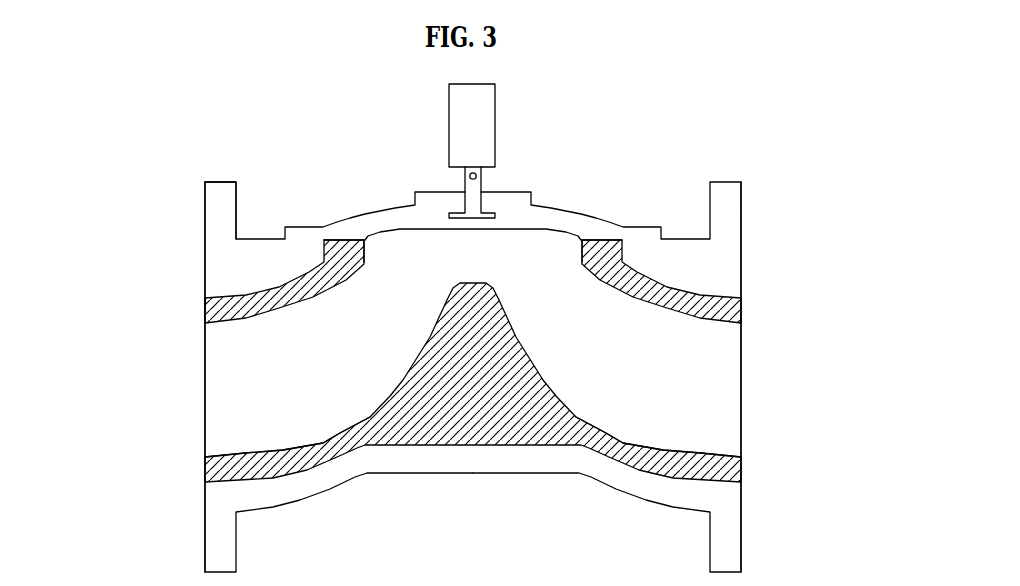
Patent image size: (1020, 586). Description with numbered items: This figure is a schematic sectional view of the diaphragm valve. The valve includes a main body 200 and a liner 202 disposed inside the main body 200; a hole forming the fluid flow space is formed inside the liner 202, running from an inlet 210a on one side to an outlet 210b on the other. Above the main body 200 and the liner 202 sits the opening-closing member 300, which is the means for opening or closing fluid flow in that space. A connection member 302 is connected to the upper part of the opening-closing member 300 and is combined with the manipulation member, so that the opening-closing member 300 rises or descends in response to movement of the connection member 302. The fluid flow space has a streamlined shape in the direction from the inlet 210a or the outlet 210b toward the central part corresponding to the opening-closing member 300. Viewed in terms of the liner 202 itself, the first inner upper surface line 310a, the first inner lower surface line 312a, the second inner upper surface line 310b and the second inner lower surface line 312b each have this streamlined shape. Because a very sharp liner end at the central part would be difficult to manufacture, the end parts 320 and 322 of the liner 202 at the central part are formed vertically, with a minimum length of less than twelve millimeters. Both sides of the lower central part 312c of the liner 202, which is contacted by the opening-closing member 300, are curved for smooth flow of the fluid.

The main body 200 is at (218, 188).
The liner 202 is at (203, 310).
The inlet 210a is at (150, 365).
The outlet 210b is at (772, 357).
The opening-closing member 300 is at (543, 214).
The connection member 302 is at (488, 110).
The first inner upper surface line 310a is at (288, 297).
The second inner upper surface line 310b is at (672, 305).
The first inner lower surface line 312a is at (303, 447).
The second inner lower surface line 312b is at (633, 463).
The lower central part 312c is at (467, 283).
The end part 320 is at (367, 252).
The end part 322 is at (580, 252).